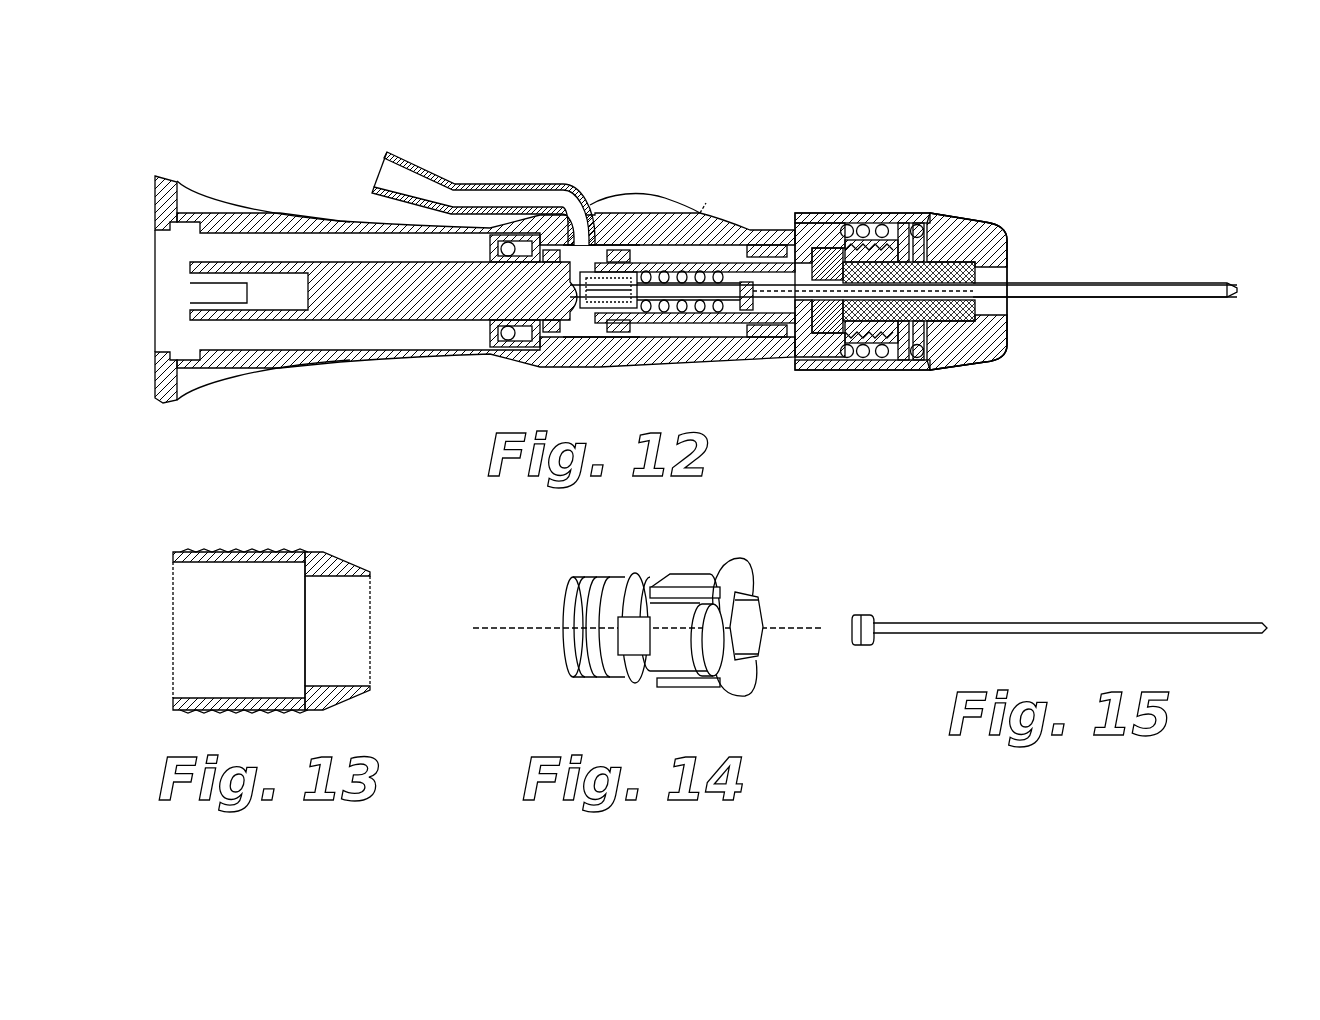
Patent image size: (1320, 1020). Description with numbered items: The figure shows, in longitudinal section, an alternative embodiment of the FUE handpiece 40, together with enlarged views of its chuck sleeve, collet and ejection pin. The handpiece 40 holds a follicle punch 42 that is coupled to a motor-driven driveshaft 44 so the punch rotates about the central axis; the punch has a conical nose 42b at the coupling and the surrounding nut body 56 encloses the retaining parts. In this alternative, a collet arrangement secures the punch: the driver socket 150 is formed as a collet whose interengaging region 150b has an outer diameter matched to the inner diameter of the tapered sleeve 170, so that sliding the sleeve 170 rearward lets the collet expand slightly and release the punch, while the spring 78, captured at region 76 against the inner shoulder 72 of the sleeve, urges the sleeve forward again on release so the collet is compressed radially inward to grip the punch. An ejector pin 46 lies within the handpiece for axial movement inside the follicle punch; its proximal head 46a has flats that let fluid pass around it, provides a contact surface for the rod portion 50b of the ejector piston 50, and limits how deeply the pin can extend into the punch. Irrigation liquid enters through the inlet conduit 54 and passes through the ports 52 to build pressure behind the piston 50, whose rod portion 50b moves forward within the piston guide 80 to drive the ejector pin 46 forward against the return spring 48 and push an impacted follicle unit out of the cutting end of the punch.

In FIG. 12, the FUE handpiece 40 is at (499, 106).
In FIG. 12, the follicle punch 42 is at (1120, 283).
In FIG. 12, the conical nose of nut 42b is at (960, 223).
In FIG. 12, the driveshaft 44 is at (350, 283).
In FIG. 12, the ejector pin 46 is at (775, 240).
In FIG. 15, the ejector pin 46 is at (1053, 627).
In FIG. 15, the head 46a is at (860, 617).
In FIG. 12, the return spring 48 is at (705, 323).
In FIG. 12, the ejector piston 50 is at (617, 245).
In FIG. 12, the rod portion 50b is at (709, 198).
In FIG. 12, the ports 52 is at (590, 320).
In FIG. 12, the inlet conduit 54 is at (408, 178).
In FIG. 12, the coupling nut 56 is at (813, 212).
In FIG. 13, the inner shoulder 72 is at (343, 683).
In FIG. 13, the region 76 is at (287, 560).
In FIG. 12, the spring 78 is at (913, 367).
In FIG. 12, the piston guide 80 is at (808, 323).
In FIG. 12, the driver socket 150 is at (995, 255).
In FIG. 14, the driver socket 150 is at (688, 582).
In FIG. 14, the interengaging region 150b is at (742, 560).
In FIG. 12, the sleeve 170 is at (917, 213).
In FIG. 13, the sleeve 170 is at (190, 562).